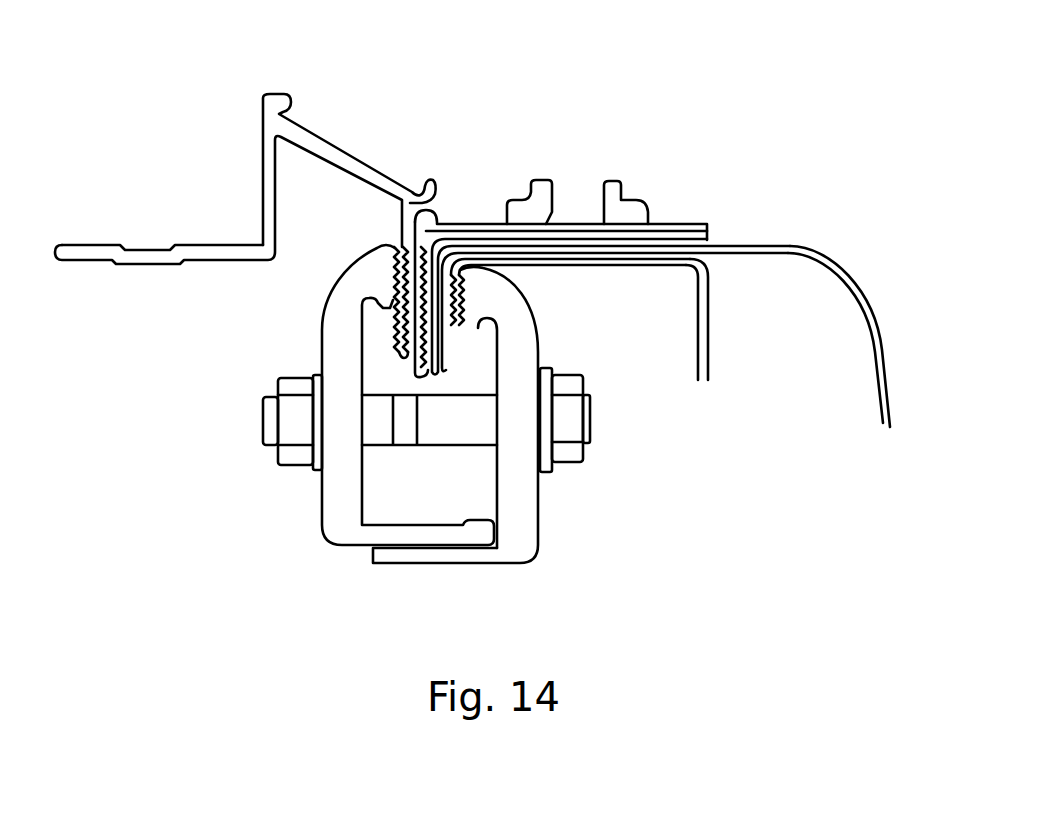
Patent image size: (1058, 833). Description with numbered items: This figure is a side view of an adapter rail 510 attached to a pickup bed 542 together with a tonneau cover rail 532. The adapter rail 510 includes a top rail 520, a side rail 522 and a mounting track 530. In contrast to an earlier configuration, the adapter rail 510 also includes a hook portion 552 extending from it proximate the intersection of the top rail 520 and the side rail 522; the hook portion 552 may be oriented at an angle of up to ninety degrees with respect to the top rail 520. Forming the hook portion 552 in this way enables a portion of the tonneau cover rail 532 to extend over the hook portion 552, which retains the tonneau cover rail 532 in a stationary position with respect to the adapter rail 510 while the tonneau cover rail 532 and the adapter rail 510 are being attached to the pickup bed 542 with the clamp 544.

The adapter rail 510 is at (469, 128).
The top rail 520 is at (697, 233).
The side rail 522 is at (430, 345).
The mounting track 530 is at (622, 196).
The tonneau cover rail 532 is at (160, 316).
The pickup bed 542 is at (777, 253).
The clamp 544 is at (347, 517).
The hook portion 552 is at (433, 220).